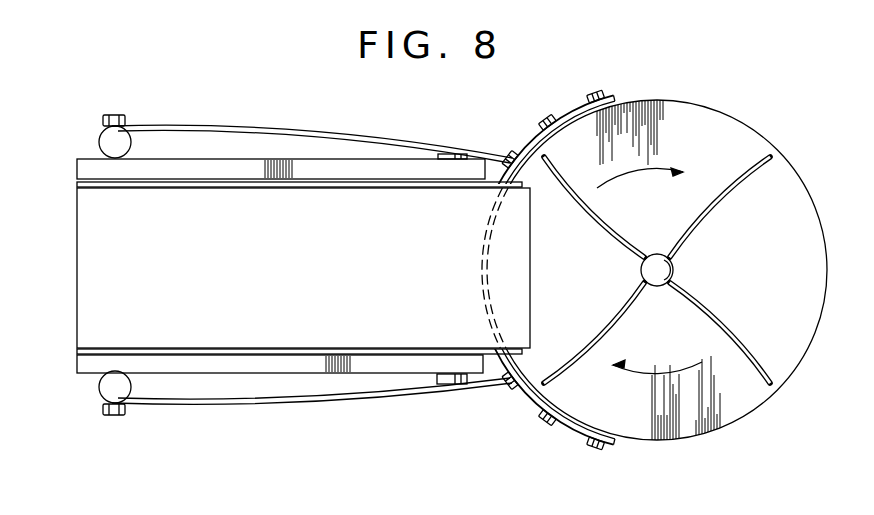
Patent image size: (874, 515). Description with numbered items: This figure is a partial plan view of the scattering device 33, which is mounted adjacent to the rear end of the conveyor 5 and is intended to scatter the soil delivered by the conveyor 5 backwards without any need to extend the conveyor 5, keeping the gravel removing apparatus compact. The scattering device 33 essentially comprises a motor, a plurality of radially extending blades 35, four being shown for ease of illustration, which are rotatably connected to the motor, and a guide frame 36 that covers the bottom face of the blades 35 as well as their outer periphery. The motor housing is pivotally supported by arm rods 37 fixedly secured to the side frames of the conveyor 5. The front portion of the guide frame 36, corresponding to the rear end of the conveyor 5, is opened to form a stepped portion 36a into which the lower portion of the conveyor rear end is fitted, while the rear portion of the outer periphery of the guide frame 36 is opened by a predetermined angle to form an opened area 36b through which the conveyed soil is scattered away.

The conveyor 5 is at (302, 273).
The scattering device 33 is at (666, 97).
The blades 35 is at (587, 218).
The guide frame 36 is at (528, 400).
The stepped portion 36a is at (488, 231).
The opened area 36b is at (612, 440).
The arm rods 37 is at (293, 132).